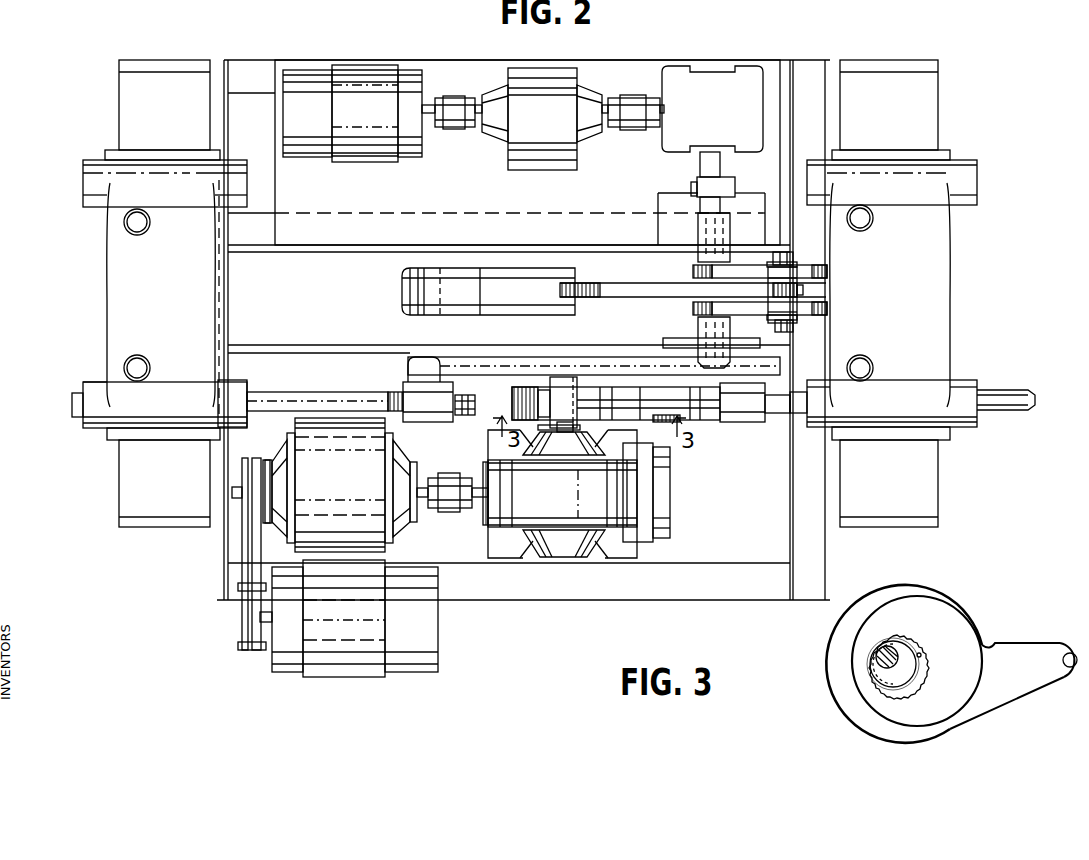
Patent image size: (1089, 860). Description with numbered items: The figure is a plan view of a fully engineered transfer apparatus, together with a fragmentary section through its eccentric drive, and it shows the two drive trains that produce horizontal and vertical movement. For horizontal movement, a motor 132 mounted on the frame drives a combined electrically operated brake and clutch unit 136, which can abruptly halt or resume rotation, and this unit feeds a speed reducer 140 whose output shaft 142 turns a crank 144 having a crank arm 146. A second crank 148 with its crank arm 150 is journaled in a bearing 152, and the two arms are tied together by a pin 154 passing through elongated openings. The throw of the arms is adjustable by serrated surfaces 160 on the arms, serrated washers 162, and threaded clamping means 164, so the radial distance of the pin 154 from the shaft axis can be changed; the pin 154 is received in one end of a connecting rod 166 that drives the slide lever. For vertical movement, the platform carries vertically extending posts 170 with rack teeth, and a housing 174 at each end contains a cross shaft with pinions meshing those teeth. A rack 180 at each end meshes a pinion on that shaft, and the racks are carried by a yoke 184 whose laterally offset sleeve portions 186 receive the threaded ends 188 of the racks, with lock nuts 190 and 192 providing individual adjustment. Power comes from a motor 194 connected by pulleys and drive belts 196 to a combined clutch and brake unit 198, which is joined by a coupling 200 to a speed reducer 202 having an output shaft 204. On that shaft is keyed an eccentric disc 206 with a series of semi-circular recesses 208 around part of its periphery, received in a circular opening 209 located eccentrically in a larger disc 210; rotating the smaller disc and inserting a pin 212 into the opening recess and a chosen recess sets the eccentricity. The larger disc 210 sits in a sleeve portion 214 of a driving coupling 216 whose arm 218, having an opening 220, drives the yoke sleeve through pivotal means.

In FIG. 2, the motor 132 is at (370, 121).
In FIG. 2, the combined electrically operated brake and clutch unit 136 is at (554, 121).
In FIG. 2, the speed reducer 140 is at (731, 121).
In FIG. 2, the output shaft 142 is at (700, 158).
In FIG. 2, the crank 144 is at (693, 270).
In FIG. 2, the crank arm 146 is at (826, 272).
In FIG. 2, the second crank 148 is at (693, 309).
In FIG. 2, the crank arm 150 is at (826, 307).
In FIG. 2, the bearing 152 is at (697, 333).
In FIG. 2, the pin 154 is at (803, 288).
In FIG. 2, the serrated surfaces 160 is at (810, 318).
In FIG. 2, the serrated washers 162 is at (797, 258).
In FIG. 2, the threaded clamping means 164 is at (790, 333).
In FIG. 2, the connecting rod 166 is at (618, 287).
In FIG. 2, the vertically extending posts 170 is at (124, 222).
In FIG. 2, the housing 174 is at (107, 335).
In FIG. 2, the rack 180 is at (342, 392).
In FIG. 2, the yoke 184 is at (540, 357).
In FIG. 2, the sleeve portions 186 is at (443, 427).
In FIG. 2, the threaded ends 188 is at (467, 428).
In FIG. 2, the lock nut 190 is at (392, 390).
In FIG. 2, the lock nut 192 is at (457, 380).
In FIG. 2, the motor 194 is at (436, 660).
In FIG. 2, the pulleys and drive belts 196 is at (240, 545).
In FIG. 2, the combined clutch and brake unit 198 is at (344, 484).
In FIG. 2, the coupling 200 is at (444, 512).
In FIG. 2, the speed reducer 202 is at (562, 496).
In FIG. 2, the output shaft 204 is at (592, 333).
In FIG. 3, the output shaft 204 is at (876, 658).
In FIG. 3, the eccentric disc 206 is at (880, 676).
In FIG. 3, the recesses 208 is at (895, 645).
In FIG. 3, the circular opening 209 is at (890, 693).
In FIG. 3, the larger disc 210 is at (960, 636).
In FIG. 3, the pin 212 is at (921, 655).
In FIG. 3, the sleeve portion 214 is at (900, 586).
In FIG. 3, the driving coupling 216 is at (998, 645).
In FIG. 3, the arm 218 is at (990, 707).
In FIG. 3, the opening 220 is at (1070, 667).